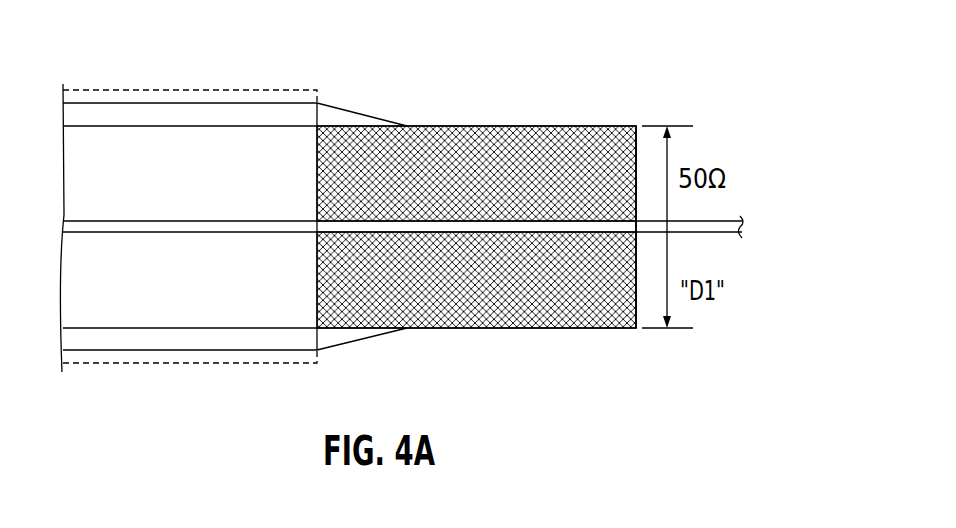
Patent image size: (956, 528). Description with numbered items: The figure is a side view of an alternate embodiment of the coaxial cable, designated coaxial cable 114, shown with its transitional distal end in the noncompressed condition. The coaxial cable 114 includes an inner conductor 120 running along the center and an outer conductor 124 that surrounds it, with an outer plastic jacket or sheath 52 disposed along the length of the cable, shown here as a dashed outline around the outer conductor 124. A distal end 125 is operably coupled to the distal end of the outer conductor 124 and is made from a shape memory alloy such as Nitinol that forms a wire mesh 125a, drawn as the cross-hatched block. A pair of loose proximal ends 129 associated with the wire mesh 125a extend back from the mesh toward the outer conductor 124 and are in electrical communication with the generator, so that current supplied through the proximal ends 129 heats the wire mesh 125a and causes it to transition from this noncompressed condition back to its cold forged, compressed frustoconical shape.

The outer plastic jacket or sheath 52 is at (223, 90).
The coaxial cable 114 is at (607, 70).
The inner conductor 120 is at (727, 225).
The outer conductor 124 is at (157, 127).
The distal end 125 is at (508, 126).
The wire mesh 125a is at (608, 140).
The loose proximal ends 129 is at (347, 110).